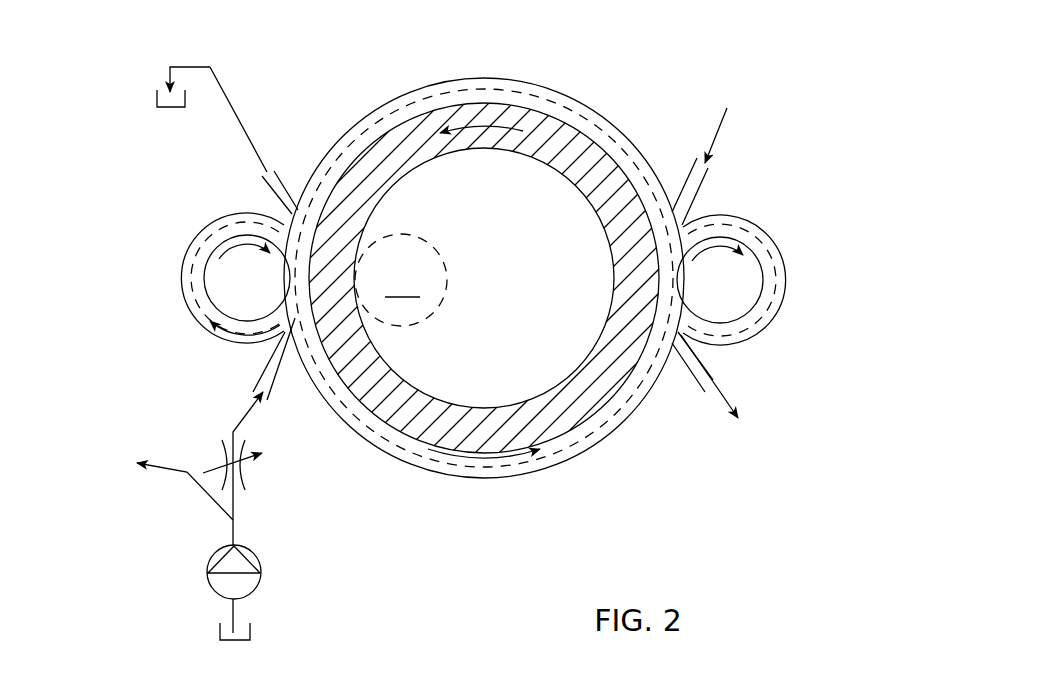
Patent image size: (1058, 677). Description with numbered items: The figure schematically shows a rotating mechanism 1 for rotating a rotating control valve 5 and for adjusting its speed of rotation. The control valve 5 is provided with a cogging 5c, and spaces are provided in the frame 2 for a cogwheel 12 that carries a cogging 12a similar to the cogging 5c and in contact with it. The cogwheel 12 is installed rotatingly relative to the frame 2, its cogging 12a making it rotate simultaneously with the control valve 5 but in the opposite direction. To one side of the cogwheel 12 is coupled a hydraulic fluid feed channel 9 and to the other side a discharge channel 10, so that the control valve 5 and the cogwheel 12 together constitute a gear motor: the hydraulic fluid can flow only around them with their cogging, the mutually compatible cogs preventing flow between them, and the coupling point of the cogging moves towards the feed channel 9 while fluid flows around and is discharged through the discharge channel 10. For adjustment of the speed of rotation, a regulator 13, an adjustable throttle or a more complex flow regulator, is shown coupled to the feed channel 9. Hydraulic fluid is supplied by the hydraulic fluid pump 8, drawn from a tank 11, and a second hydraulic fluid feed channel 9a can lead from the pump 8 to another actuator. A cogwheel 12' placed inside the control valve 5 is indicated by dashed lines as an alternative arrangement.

The apparatus 1 is at (650, 490).
The frame 2 is at (438, 468).
The control valve 5 is at (615, 172).
The cogging 5c is at (570, 113).
The hydraulic fluid pump 8 is at (208, 570).
The hydraulic fluid feed channel 9 is at (707, 180).
The second hydraulic fluid feed channel 9a is at (187, 477).
The discharge channel 10 is at (235, 110).
The tank 11 is at (157, 95).
The cogwheel 12 is at (483, 279).
The roller alternative position 12' is at (401, 280).
The cogging 12a is at (203, 227).
The regulator 13 is at (257, 473).